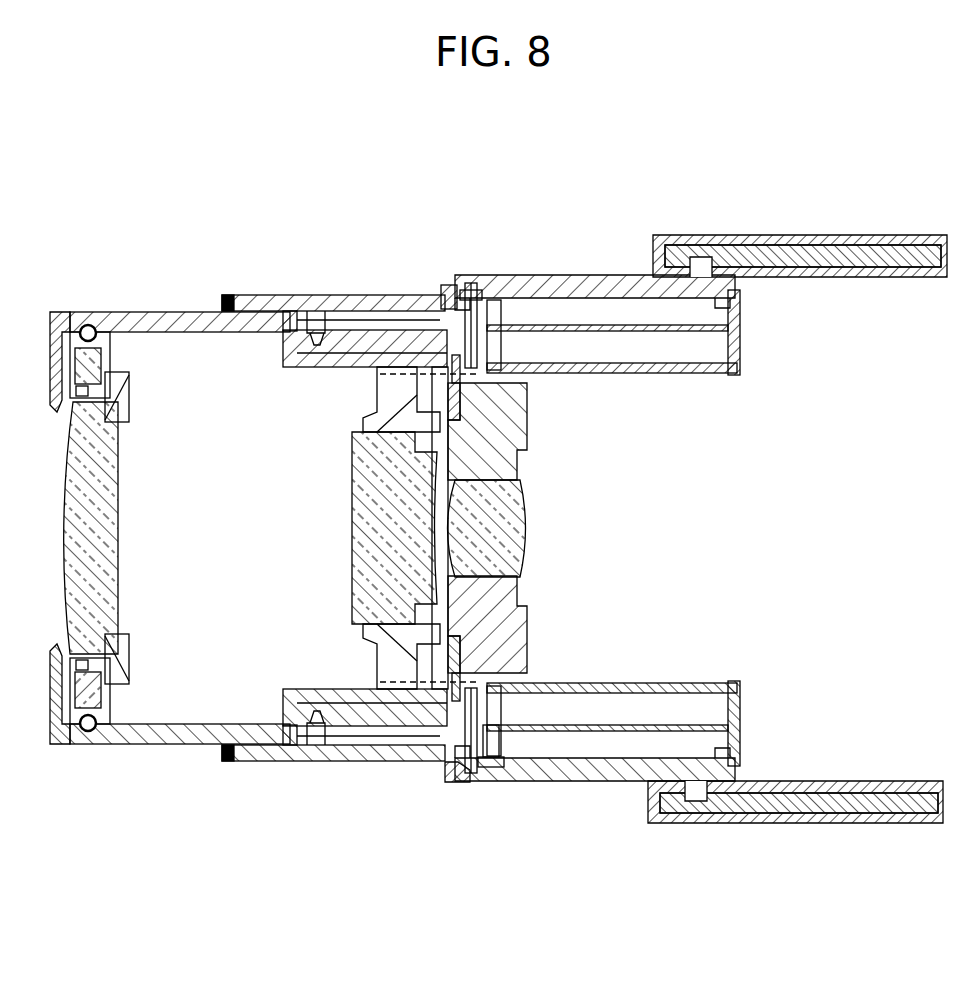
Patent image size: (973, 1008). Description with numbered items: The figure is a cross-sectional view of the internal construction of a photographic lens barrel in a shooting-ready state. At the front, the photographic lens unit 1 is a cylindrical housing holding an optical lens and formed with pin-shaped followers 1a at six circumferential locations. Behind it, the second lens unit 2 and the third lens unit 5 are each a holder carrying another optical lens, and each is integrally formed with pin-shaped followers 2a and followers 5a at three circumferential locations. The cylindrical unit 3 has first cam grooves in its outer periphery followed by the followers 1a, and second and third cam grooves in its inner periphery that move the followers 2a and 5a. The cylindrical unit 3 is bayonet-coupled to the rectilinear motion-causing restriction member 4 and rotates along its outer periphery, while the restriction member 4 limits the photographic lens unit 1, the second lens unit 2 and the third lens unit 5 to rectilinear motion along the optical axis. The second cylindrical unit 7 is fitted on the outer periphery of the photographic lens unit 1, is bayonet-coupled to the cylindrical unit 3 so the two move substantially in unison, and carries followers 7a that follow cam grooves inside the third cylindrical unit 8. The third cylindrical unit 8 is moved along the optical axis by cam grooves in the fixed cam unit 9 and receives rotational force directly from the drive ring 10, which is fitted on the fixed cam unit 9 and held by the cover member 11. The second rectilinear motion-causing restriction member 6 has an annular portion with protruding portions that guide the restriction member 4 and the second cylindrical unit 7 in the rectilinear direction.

The photographic lens unit 1 is at (120, 292).
The followers 1a is at (317, 713).
The second lens unit 2 is at (340, 516).
The followers 2a is at (492, 740).
The cylindrical unit 3 is at (359, 335).
The rectilinear motion-causing restriction member 4 is at (387, 697).
The third lens unit 5 is at (540, 526).
The followers 5a is at (453, 290).
The second rectilinear motion-causing restriction member 6 is at (741, 350).
The second cylindrical unit 7 is at (269, 298).
The followers 7a is at (462, 777).
The third cylindrical unit 8 is at (537, 274).
The fixed cam unit 9 is at (832, 257).
The drive ring 10 is at (772, 250).
The cover member 11 is at (675, 823).